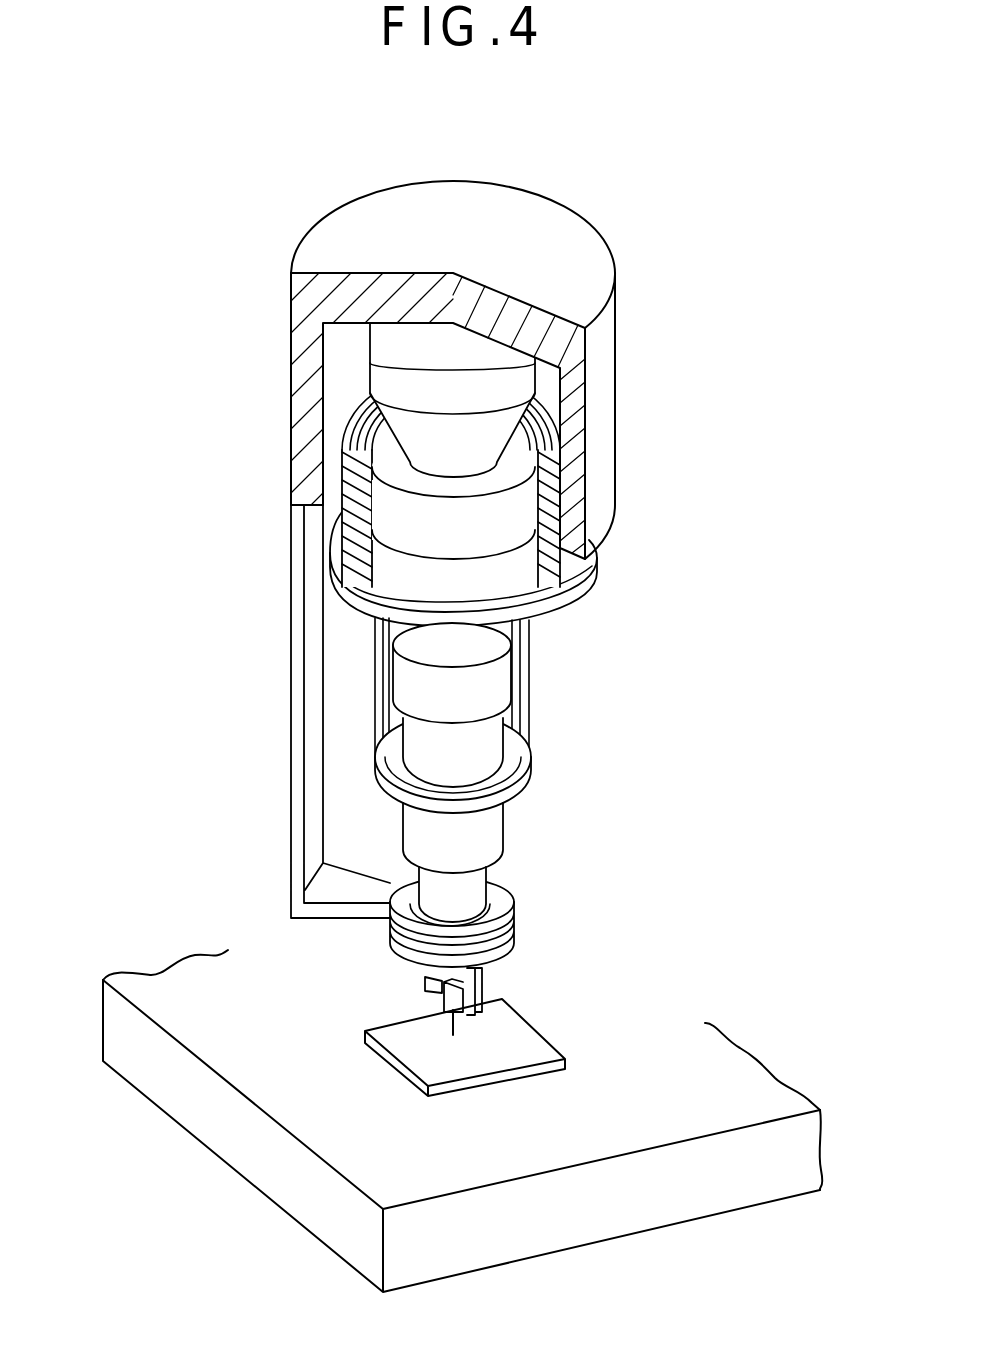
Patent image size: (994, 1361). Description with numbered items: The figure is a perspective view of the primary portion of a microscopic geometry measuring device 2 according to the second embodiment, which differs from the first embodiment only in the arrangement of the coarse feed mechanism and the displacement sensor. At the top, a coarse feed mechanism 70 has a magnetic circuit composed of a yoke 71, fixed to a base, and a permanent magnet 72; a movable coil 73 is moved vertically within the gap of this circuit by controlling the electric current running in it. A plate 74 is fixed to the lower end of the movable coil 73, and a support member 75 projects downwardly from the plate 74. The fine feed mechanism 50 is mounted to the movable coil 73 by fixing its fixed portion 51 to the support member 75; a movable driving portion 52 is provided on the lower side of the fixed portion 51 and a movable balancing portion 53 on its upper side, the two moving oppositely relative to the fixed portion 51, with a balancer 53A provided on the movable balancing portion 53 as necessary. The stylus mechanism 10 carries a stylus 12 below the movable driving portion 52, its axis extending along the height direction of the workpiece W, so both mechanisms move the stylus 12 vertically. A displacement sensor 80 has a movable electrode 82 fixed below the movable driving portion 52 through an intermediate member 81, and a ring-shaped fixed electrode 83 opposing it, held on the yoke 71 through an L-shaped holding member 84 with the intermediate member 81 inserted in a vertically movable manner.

The microscopic geometry measuring device 2 is at (222, 205).
The stylus mechanism 10 is at (393, 995).
The stylus 12 is at (453, 1020).
The fine feed mechanism 50 is at (693, 798).
The fixed portion 51 is at (515, 790).
The movable driving portion 52 is at (492, 842).
The movable balancing portion 53 is at (487, 748).
The balancer 53A is at (505, 680).
The coarse feed mechanism 70 is at (645, 290).
The yoke 71 is at (292, 297).
The permanent magnet 72 is at (385, 368).
The movable coil 73 is at (345, 422).
The plate 74 is at (565, 575).
The support member 75 is at (528, 632).
The displacement sensor 80 is at (628, 932).
The intermediate member 81 is at (433, 892).
The movable electrode 82 is at (507, 957).
The fixed electrode 83 is at (507, 902).
The L-shaped holding member 84 is at (297, 862).
The workpiece W is at (560, 1040).